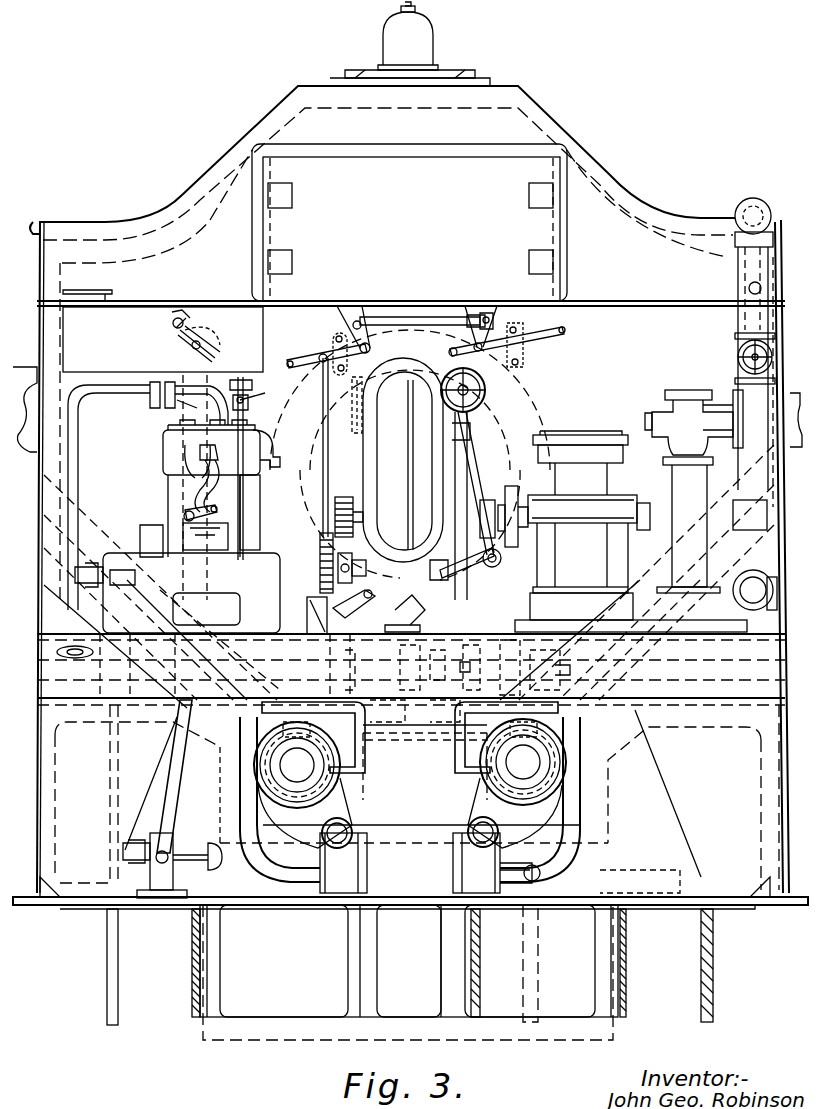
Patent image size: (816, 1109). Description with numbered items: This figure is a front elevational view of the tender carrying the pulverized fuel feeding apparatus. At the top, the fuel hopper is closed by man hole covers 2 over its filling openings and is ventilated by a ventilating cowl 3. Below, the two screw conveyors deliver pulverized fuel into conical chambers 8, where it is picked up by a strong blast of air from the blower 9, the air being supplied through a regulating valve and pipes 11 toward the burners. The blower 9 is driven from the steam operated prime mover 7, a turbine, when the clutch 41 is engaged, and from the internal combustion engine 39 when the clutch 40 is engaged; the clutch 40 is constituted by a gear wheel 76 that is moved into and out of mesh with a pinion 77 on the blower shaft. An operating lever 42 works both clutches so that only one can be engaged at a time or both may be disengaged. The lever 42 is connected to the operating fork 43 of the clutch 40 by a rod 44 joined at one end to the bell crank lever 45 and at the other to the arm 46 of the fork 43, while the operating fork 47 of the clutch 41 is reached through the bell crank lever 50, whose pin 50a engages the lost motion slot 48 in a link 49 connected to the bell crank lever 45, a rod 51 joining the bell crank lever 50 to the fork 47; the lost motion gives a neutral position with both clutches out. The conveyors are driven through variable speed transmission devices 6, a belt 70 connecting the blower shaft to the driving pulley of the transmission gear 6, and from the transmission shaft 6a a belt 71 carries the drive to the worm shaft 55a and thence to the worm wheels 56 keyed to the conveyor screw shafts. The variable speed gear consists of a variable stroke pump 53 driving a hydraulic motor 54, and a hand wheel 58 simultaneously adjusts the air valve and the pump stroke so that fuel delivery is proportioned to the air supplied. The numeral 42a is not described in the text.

The man hole covers 2 is at (472, 72).
The ventilating cowl 3 is at (430, 32).
The variable speed transmission devices 6 is at (327, 747).
The transmission shaft 6a is at (405, 613).
The steam operated prime mover 7 is at (582, 542).
The conical chambers 8 is at (344, 813).
The blower 9 is at (397, 345).
The pipes 11 is at (533, 425).
The internal combustion engine 39 is at (170, 486).
The clutch 40 is at (351, 564).
The clutch 41 is at (489, 508).
The operating lever 42 is at (313, 352).
The lever arm 42a is at (585, 340).
The operating fork 43 is at (376, 598).
The rod 44 is at (321, 476).
The bell crank lever 45 is at (322, 383).
The arm 46 is at (318, 628).
The operating fork 47 is at (500, 560).
The lost motion slot 48 is at (470, 314).
The link 49 is at (430, 326).
The bell crank lever 50 is at (496, 323).
The pin 50a is at (463, 312).
The rod 51 is at (490, 398).
The variable stroke pump 53 is at (441, 693).
The hydraulic motor 54 is at (401, 693).
The worm shaft 55a is at (405, 732).
The worm wheels 56 is at (258, 788).
The hand wheel 58 is at (490, 385).
The belt 70 is at (516, 500).
The belt 71 is at (325, 670).
The gear wheel 76 is at (318, 560).
The pinion 77 is at (344, 495).